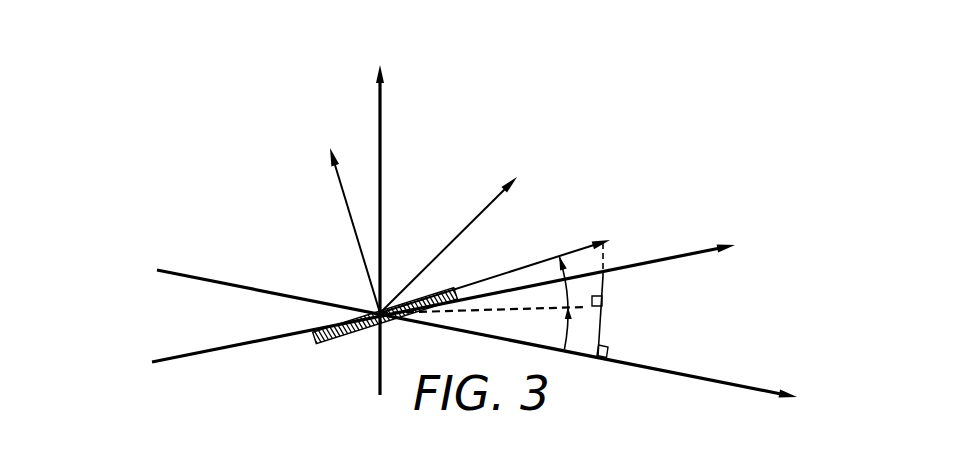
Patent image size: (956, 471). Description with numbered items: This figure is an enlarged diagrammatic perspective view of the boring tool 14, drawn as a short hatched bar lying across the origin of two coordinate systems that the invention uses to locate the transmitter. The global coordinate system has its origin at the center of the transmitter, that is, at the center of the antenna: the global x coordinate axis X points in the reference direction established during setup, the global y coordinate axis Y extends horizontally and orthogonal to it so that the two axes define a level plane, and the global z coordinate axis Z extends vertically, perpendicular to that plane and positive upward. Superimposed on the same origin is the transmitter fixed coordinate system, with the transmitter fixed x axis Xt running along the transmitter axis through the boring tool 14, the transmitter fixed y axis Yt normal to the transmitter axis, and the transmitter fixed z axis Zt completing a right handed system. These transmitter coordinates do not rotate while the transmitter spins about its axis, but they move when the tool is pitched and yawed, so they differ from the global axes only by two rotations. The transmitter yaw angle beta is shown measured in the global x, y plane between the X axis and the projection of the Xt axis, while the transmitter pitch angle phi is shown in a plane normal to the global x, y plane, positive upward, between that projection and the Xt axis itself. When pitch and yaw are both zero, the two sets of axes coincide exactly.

The boring tool 14 is at (345, 339).
The global x coordinate axis X is at (486, 341).
The global y coordinate axis Y is at (458, 295).
The global z coordinate axis Z is at (394, 228).
The transmitter fixed x axis Xt is at (495, 276).
The transmitter fixed y axis Yt is at (465, 236).
The transmitter fixed z axis Zt is at (338, 223).
The transmitter yaw angle beta is at (556, 303).
The transmitter pitch angle phi is at (565, 283).